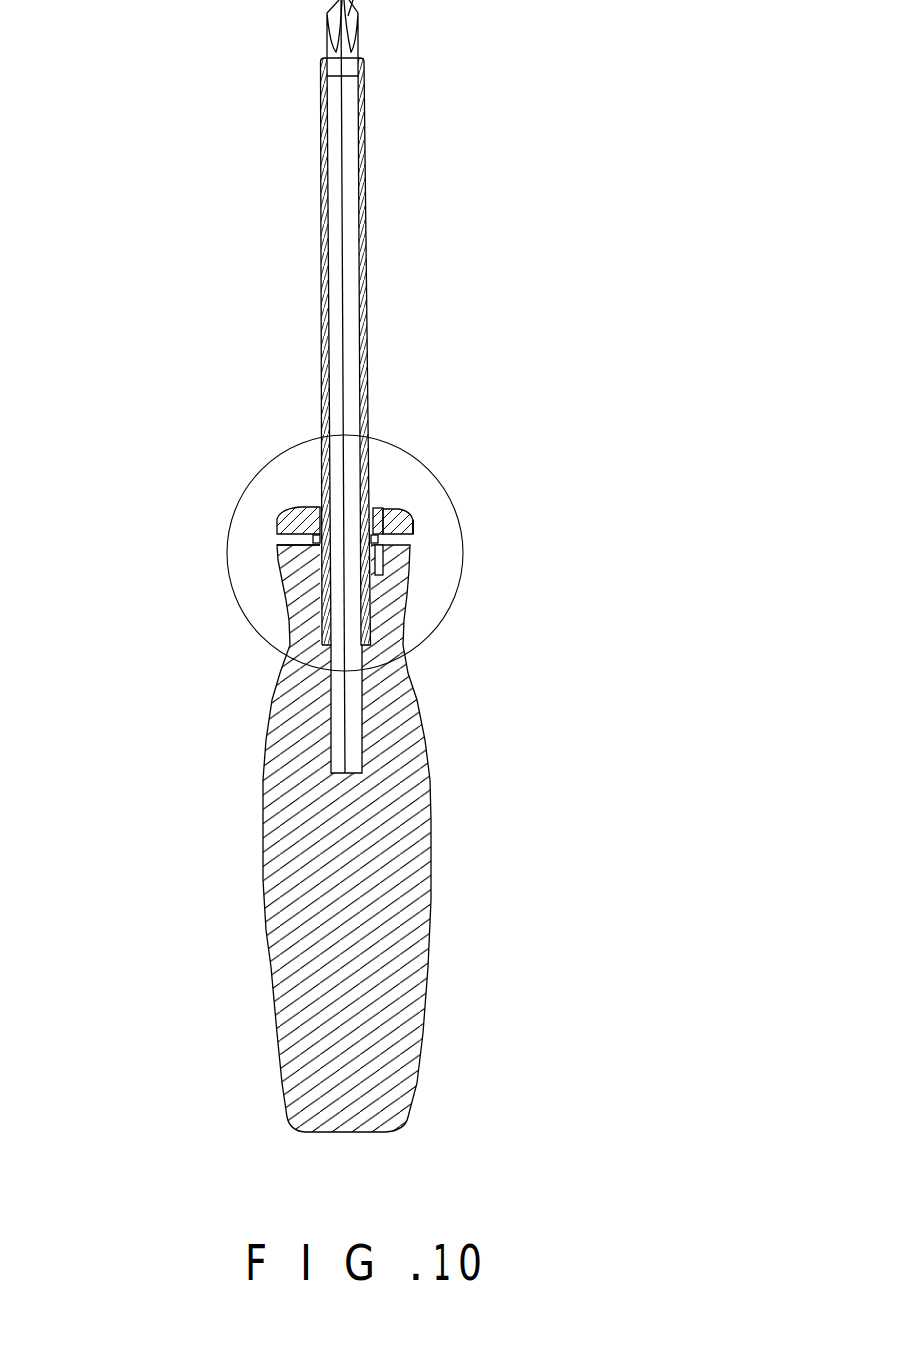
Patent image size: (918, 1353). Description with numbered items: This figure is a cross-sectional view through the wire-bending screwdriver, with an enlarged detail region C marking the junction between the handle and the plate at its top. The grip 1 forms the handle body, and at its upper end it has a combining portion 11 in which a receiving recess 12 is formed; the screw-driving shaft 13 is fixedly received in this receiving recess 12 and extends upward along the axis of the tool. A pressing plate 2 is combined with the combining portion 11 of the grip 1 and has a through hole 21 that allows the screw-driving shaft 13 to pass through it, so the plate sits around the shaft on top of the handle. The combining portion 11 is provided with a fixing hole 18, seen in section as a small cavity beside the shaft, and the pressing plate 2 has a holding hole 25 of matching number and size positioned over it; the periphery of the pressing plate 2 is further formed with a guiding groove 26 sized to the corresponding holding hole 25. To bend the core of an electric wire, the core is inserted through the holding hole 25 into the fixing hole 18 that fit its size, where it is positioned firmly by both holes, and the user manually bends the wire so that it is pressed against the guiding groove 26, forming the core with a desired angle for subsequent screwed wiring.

The grip 1 is at (420, 822).
The pressing plate 2 is at (300, 512).
The combining portion 11 is at (313, 538).
The receiving recess 12 is at (320, 556).
The screw-driving shaft 13 is at (366, 364).
The fixing hole 18 is at (378, 560).
The through hole 21 is at (382, 523).
The holding hole 25 is at (405, 520).
The guiding groove 26 is at (414, 527).
The detail circle C is at (462, 565).